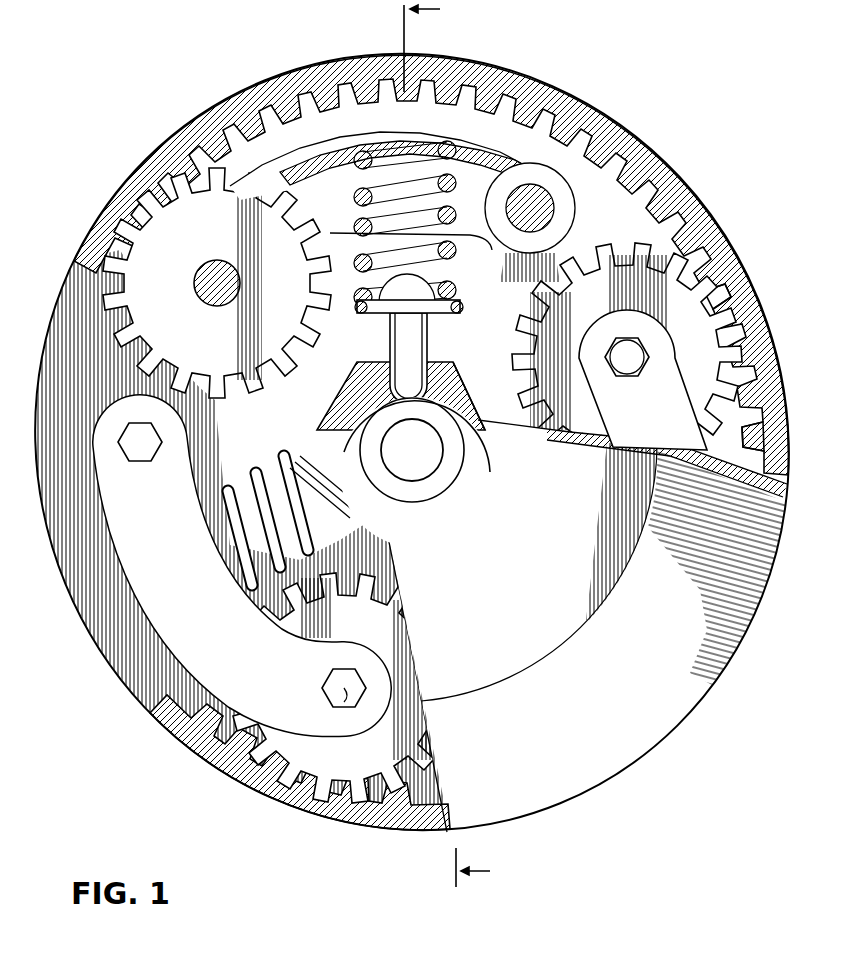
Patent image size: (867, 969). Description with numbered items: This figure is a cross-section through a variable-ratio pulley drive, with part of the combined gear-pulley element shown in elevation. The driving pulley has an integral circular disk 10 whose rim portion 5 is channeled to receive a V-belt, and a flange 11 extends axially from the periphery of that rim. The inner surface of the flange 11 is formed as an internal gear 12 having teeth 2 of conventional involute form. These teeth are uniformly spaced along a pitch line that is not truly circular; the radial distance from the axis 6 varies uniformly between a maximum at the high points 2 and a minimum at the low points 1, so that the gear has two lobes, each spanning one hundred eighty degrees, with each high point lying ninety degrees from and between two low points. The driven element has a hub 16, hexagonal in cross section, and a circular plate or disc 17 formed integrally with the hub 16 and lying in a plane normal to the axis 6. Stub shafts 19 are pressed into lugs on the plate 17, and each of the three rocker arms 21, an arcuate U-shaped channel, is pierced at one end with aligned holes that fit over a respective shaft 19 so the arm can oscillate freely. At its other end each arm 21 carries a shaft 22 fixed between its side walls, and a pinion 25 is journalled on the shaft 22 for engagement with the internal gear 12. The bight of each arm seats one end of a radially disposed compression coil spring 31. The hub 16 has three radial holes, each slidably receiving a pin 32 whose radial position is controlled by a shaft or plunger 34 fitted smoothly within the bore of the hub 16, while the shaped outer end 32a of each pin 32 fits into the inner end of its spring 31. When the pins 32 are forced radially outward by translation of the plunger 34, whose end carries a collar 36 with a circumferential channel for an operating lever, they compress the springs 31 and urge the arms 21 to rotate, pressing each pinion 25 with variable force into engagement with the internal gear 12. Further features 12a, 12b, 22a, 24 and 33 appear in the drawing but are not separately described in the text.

The low point 1 is at (781, 434).
The gear teeth 2 is at (418, 76).
The rim portion 5 is at (572, 776).
The axis 6 is at (402, 437).
The circular disk 10 is at (568, 546).
The flange 11 is at (608, 125).
The internal gear 12 is at (775, 404).
The ring gear tooth 12a is at (715, 272).
The lower ring gear segment 12b is at (143, 718).
The hub 16 is at (361, 408).
The circular plate 17 is at (83, 308).
The stub shaft 19 is at (533, 208).
The rocker arm 21 is at (493, 226).
The shaft 22 is at (222, 280).
The hexagonal nut 22a is at (638, 368).
The pin head 24 is at (392, 362).
The pinion 25 is at (220, 247).
The compression coil spring 31 is at (455, 181).
The pin 32 is at (420, 344).
The pin outer end 32a is at (460, 309).
The block face 33 is at (433, 398).
The plunger shaft 34 is at (416, 468).
The collar 36 is at (463, 511).